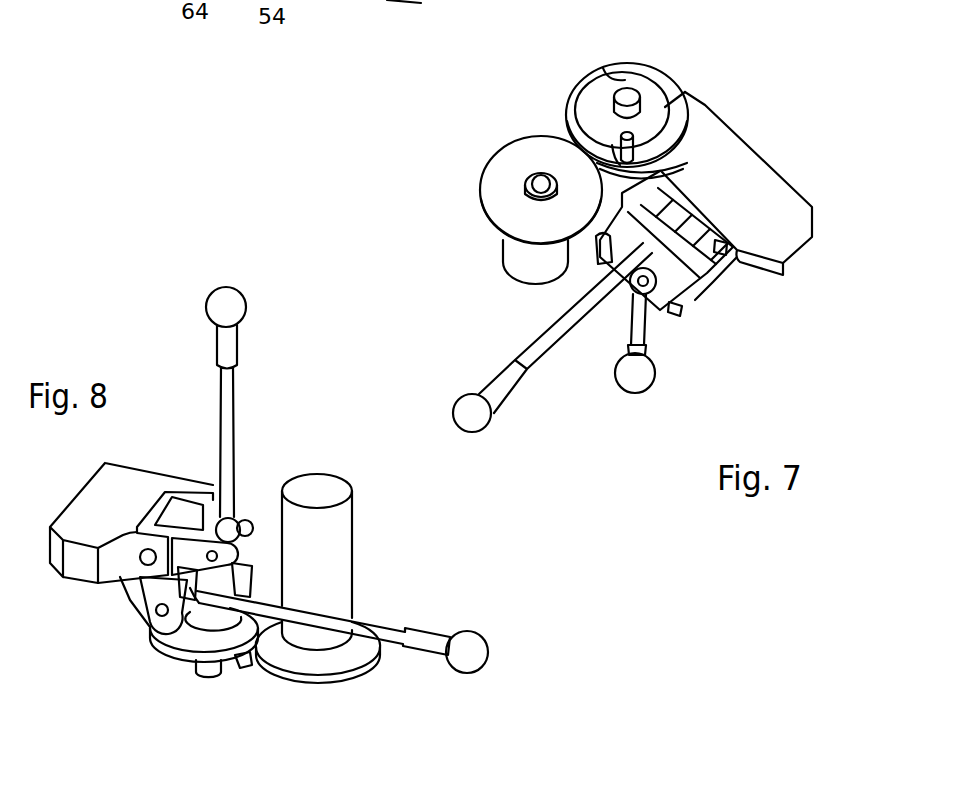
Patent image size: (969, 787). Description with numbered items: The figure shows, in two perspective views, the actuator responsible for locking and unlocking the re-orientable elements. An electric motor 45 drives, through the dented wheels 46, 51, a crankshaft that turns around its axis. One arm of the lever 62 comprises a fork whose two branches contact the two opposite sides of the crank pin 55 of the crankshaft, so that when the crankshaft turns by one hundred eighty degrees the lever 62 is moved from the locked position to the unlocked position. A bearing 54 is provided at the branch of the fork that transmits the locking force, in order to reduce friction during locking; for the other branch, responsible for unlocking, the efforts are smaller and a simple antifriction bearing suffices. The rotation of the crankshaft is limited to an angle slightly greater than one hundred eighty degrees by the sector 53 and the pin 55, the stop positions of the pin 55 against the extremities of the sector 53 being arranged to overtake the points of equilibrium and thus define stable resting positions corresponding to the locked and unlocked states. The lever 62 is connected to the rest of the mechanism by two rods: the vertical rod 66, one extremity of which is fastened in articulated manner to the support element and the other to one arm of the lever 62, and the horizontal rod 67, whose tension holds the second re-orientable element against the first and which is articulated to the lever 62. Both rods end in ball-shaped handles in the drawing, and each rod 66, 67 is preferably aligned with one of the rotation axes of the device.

In FIG. 7, the electric motor 45 is at (517, 262).
In FIG. 8, the electric motor 45 is at (330, 563).
In FIG. 7, the dented wheel 46 is at (518, 163).
In FIG. 8, the dented wheel 46 is at (368, 670).
In FIG. 7, the dented wheel 51 is at (658, 83).
In FIG. 8, the dented wheel 51 is at (162, 640).
In FIG. 7, the sector 53 is at (623, 78).
In FIG. 8, the sector 53 is at (233, 670).
In FIG. 8, the bearing 54 is at (208, 623).
In FIG. 7, the crank pin 55 is at (646, 134).
In FIG. 7, the lever 62 is at (697, 288).
In FIG. 8, the lever 62 is at (153, 590).
In FIG. 7, the vertical rod 66 is at (647, 337).
In FIG. 8, the vertical rod 66 is at (233, 412).
In FIG. 7, the horizontal rod 67 is at (532, 360).
In FIG. 8, the horizontal rod 67 is at (385, 633).